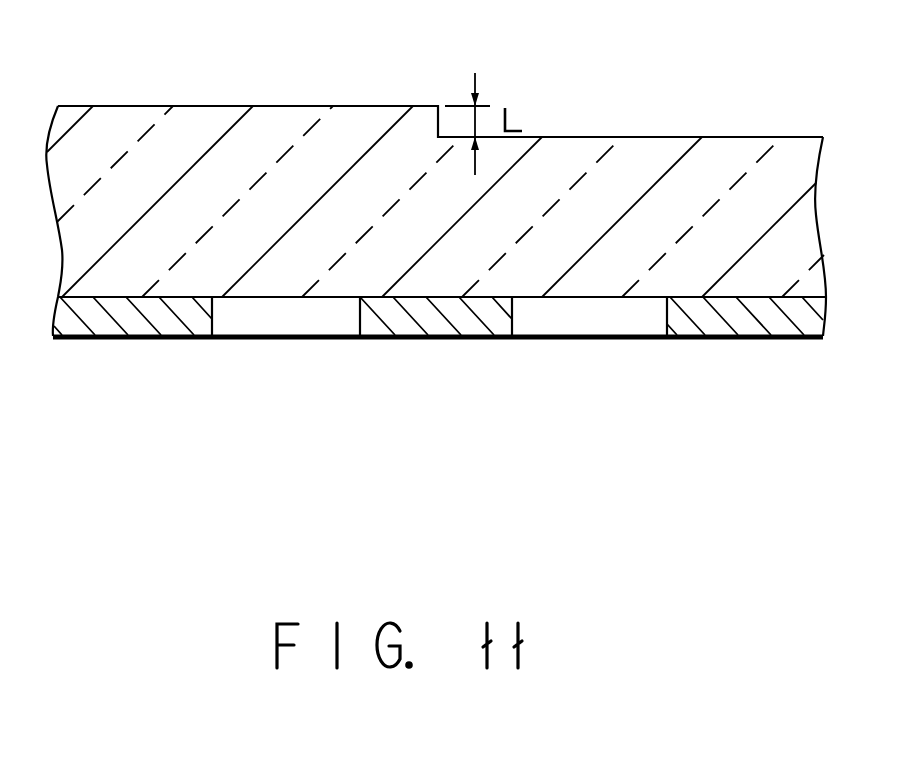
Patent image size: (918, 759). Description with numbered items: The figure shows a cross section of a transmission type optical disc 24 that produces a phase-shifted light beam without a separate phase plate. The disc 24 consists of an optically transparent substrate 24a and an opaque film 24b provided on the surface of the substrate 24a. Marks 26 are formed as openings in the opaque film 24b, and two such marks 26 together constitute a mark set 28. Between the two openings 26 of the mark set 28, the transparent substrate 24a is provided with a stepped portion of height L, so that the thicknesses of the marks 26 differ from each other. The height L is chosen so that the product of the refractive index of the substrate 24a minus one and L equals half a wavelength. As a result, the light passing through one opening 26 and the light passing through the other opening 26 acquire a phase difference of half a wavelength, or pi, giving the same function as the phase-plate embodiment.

The disc 24 is at (222, 96).
The optically transparent substrate 24a is at (755, 148).
The opaque film 24b is at (758, 327).
The marks 26 is at (285, 322).
The mark set 28 is at (607, 398).